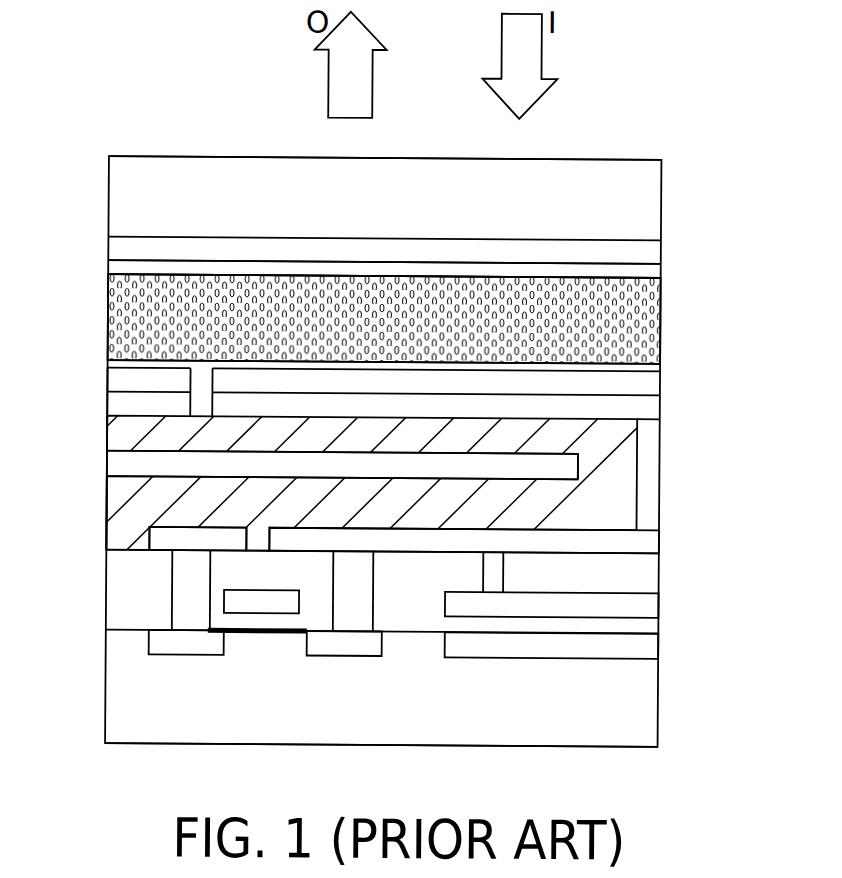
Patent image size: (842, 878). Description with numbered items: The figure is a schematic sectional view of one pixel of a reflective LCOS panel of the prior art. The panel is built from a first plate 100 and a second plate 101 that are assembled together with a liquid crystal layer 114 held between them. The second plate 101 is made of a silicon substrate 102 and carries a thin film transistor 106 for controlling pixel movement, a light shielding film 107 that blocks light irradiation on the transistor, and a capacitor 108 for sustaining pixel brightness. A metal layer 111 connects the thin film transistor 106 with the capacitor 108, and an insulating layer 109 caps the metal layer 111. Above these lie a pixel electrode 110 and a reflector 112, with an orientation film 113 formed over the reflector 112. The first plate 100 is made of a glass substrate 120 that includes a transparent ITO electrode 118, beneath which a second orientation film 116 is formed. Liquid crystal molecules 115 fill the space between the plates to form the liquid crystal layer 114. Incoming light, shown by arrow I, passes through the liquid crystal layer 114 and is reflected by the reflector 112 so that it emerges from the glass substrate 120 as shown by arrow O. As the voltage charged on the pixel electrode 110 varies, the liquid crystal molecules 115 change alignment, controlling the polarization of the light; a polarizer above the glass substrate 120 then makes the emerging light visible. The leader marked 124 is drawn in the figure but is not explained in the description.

The first plate 100 is at (458, 202).
The second plate 101 is at (404, 558).
The silicon substrate 102 is at (414, 694).
The thin film transistor 106 is at (382, 665).
The light shielding film 107 is at (112, 464).
The capacitor 108 is at (672, 590).
The insulating layer 109 is at (112, 439).
The pixel electrode 110 is at (649, 408).
The metal layer 111 is at (644, 539).
The reflector 112 is at (649, 383).
The orientation film 113 is at (112, 365).
The liquid crystal layer 114 is at (393, 296).
The liquid crystal molecule 115 is at (112, 284).
The orientation film 116 is at (649, 270).
The transparent electrode 118 is at (649, 253).
The glass substrate 120 is at (578, 177).
The light path through opening 124 is at (199, 415).